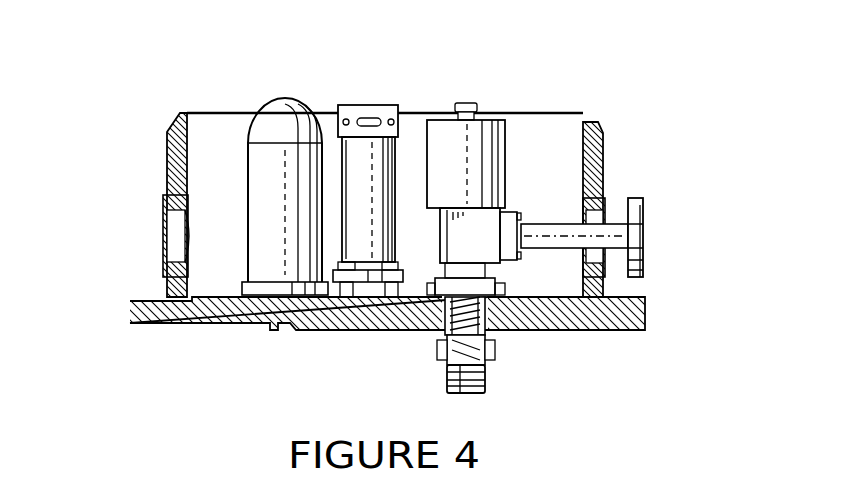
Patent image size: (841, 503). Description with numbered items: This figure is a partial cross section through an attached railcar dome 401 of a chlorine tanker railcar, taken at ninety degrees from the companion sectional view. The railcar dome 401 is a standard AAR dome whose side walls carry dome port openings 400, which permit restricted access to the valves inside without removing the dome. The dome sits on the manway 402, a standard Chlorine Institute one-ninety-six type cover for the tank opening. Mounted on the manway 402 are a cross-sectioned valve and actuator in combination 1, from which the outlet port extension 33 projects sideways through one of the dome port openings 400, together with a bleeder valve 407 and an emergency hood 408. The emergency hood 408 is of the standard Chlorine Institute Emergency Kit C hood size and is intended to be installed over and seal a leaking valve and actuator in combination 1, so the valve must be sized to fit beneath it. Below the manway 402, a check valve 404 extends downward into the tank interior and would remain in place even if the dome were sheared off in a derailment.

The valve and actuator in combination 1 is at (540, 152).
The outlet port extension 33 is at (645, 258).
The dome port openings 400 is at (163, 235).
The railcar dome 401 is at (167, 167).
The manway 402 is at (333, 336).
The check valve 404 is at (487, 377).
The bleeder valve 407 is at (366, 105).
The emergency hood 408 is at (290, 99).